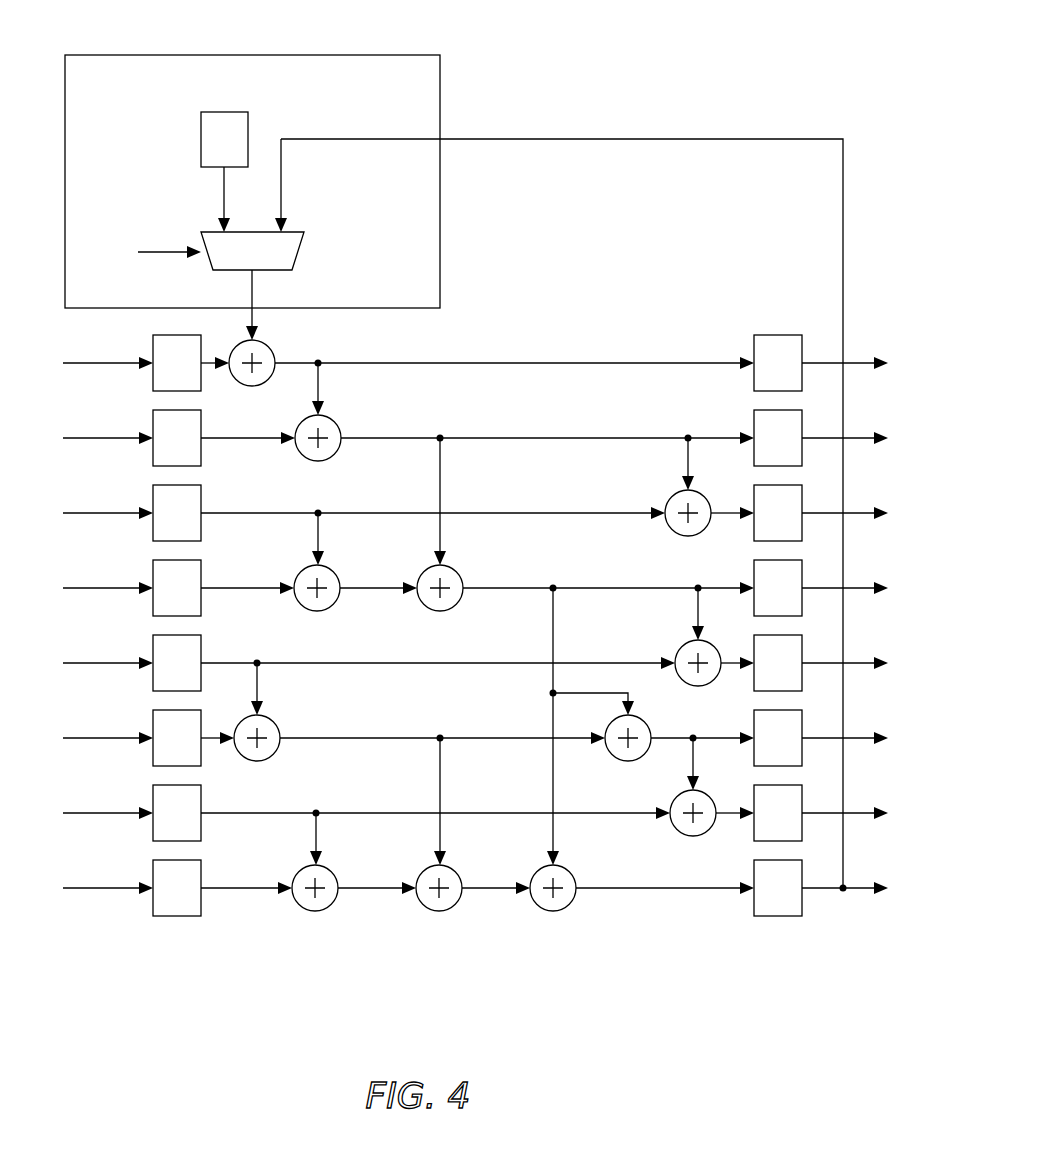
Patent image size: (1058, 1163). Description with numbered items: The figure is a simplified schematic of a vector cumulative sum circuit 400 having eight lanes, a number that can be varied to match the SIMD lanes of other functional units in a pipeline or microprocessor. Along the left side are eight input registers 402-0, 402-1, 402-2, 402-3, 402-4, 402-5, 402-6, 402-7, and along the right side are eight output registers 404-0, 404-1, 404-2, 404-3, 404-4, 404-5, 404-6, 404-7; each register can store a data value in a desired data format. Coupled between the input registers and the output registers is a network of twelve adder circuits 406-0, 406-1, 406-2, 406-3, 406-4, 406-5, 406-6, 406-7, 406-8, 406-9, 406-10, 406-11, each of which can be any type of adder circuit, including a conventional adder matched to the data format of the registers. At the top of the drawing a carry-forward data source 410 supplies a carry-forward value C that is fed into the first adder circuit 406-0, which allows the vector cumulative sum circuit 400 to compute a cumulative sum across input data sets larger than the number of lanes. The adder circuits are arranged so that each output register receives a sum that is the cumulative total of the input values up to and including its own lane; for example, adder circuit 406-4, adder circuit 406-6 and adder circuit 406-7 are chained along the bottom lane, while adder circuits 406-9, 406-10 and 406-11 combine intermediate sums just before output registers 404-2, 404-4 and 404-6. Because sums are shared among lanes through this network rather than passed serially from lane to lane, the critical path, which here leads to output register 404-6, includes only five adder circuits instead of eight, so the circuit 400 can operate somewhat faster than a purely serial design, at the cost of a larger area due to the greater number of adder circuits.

The vector cumulative sum circuit 400 is at (787, 82).
The carry-forward data source 410 is at (440, 102).
The input register 402-0 is at (150, 382).
The input register 402-1 is at (150, 457).
The input register 402-2 is at (150, 532).
The input register 402-3 is at (150, 607).
The input register 402-4 is at (150, 682).
The input register 402-5 is at (150, 757).
The input register 402-6 is at (150, 832).
The input register 402-7 is at (150, 907).
The output register 404-0 is at (753, 352).
The output register 404-1 is at (753, 427).
The output register 404-2 is at (802, 500).
The output register 404-3 is at (802, 575).
The output register 404-4 is at (802, 650).
The output register 404-5 is at (802, 725).
The output register 404-6 is at (802, 800).
The output register 404-7 is at (783, 918).
The adder circuit 406-0 is at (272, 349).
The adder circuit 406-1 is at (282, 723).
The adder circuit 406-2 is at (343, 427).
The adder circuit 406-3 is at (302, 608).
The adder circuit 406-4 is at (310, 915).
The adder circuit 406-5 is at (418, 608).
The adder circuit 406-6 is at (433, 915).
The adder circuit 406-7 is at (547, 915).
The adder circuit 406-8 is at (632, 762).
The adder circuit 406-9 is at (670, 532).
The adder circuit 406-10 is at (703, 687).
The adder circuit 406-11 is at (692, 838).